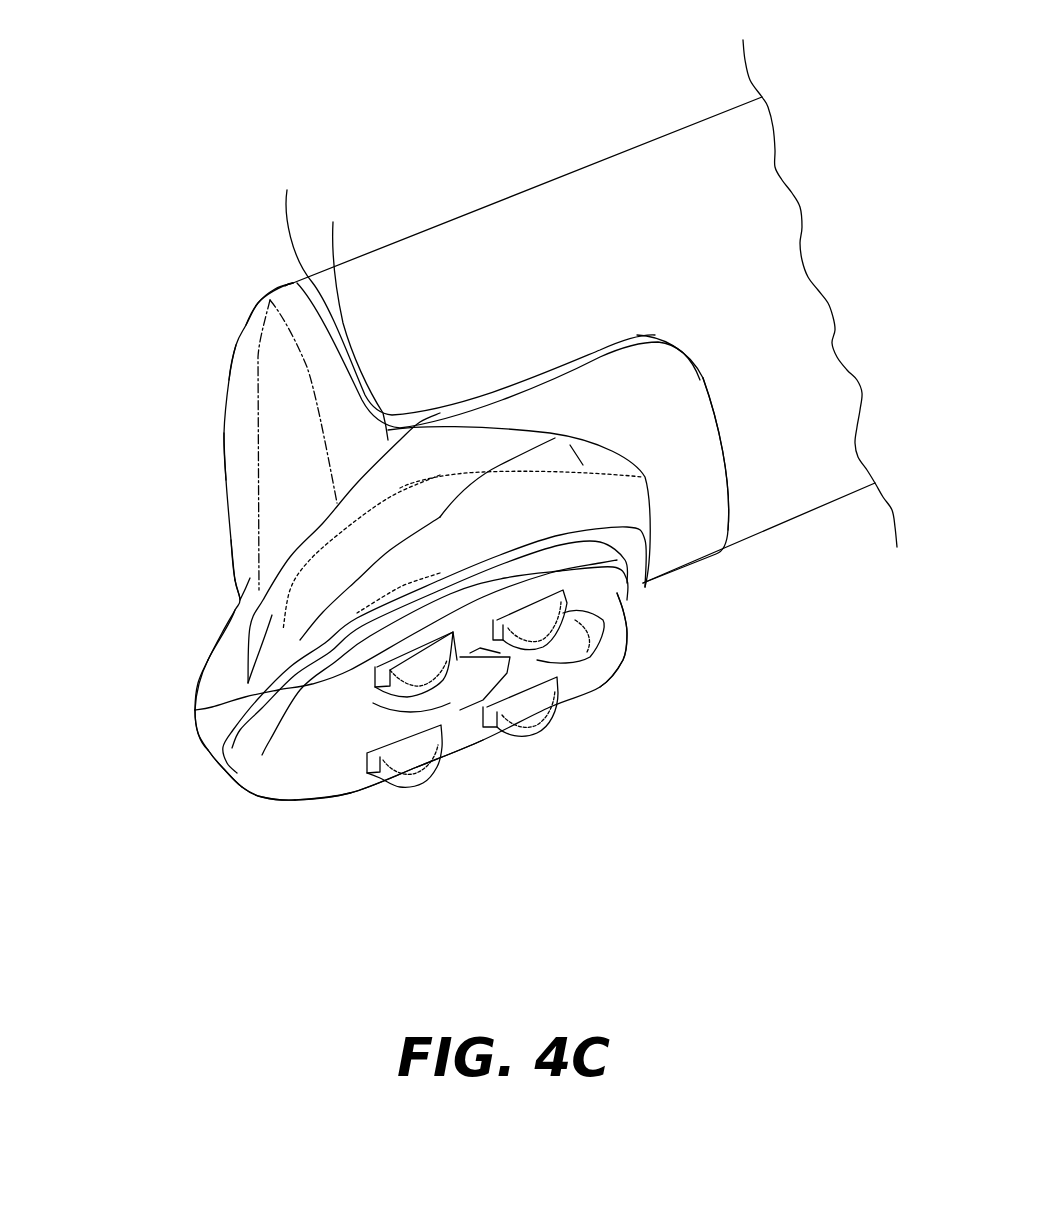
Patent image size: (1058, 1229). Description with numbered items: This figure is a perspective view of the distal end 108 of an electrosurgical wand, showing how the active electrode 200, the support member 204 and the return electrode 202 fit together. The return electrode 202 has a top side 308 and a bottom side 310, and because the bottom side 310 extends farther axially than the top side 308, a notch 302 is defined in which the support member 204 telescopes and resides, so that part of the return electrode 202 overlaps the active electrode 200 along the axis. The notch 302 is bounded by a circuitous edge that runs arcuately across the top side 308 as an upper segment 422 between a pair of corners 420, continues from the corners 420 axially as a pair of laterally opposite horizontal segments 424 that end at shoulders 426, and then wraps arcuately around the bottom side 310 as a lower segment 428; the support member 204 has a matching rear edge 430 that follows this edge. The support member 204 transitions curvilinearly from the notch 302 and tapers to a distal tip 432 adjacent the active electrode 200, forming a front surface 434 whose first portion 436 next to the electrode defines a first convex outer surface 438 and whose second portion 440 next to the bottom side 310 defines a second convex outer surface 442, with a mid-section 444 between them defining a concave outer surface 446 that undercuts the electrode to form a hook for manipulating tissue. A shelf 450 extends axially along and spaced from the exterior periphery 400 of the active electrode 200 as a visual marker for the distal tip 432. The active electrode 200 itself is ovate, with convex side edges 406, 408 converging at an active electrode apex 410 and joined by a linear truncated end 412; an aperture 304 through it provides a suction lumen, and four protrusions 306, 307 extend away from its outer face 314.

The distal end 108 is at (210, 752).
The active electrode 200 is at (370, 792).
The return electrode 202 is at (540, 184).
The support member 204 is at (228, 498).
The notch 302 is at (598, 345).
The aperture 304 is at (450, 703).
The protrusion 306 is at (543, 740).
The protrusion 307 is at (417, 790).
The top side 308 is at (755, 535).
The bottom side 310 is at (466, 212).
The outer face 314 is at (280, 783).
The exterior periphery 400 is at (470, 733).
The side edge 406 is at (330, 800).
The side edge 408 is at (200, 709).
The active electrode apex 410 is at (243, 790).
The truncated end 412 is at (627, 643).
The corners 420 is at (675, 338).
The upper segment 422 is at (703, 380).
The horizontal segments 424 is at (540, 365).
The shoulders 426 is at (380, 522).
The lower segment 428 is at (464, 289).
The rear edge 430 is at (293, 283).
The distal tip 432 is at (203, 745).
The front surface 434 is at (249, 454).
The first portion 436 is at (193, 673).
The first convex outer surface 438 is at (213, 657).
The second portion 440 is at (236, 324).
The second convex outer surface 442 is at (240, 347).
The mid-section 444 is at (233, 598).
The concave outer surface 446 is at (232, 553).
The shelf 450 is at (353, 319).